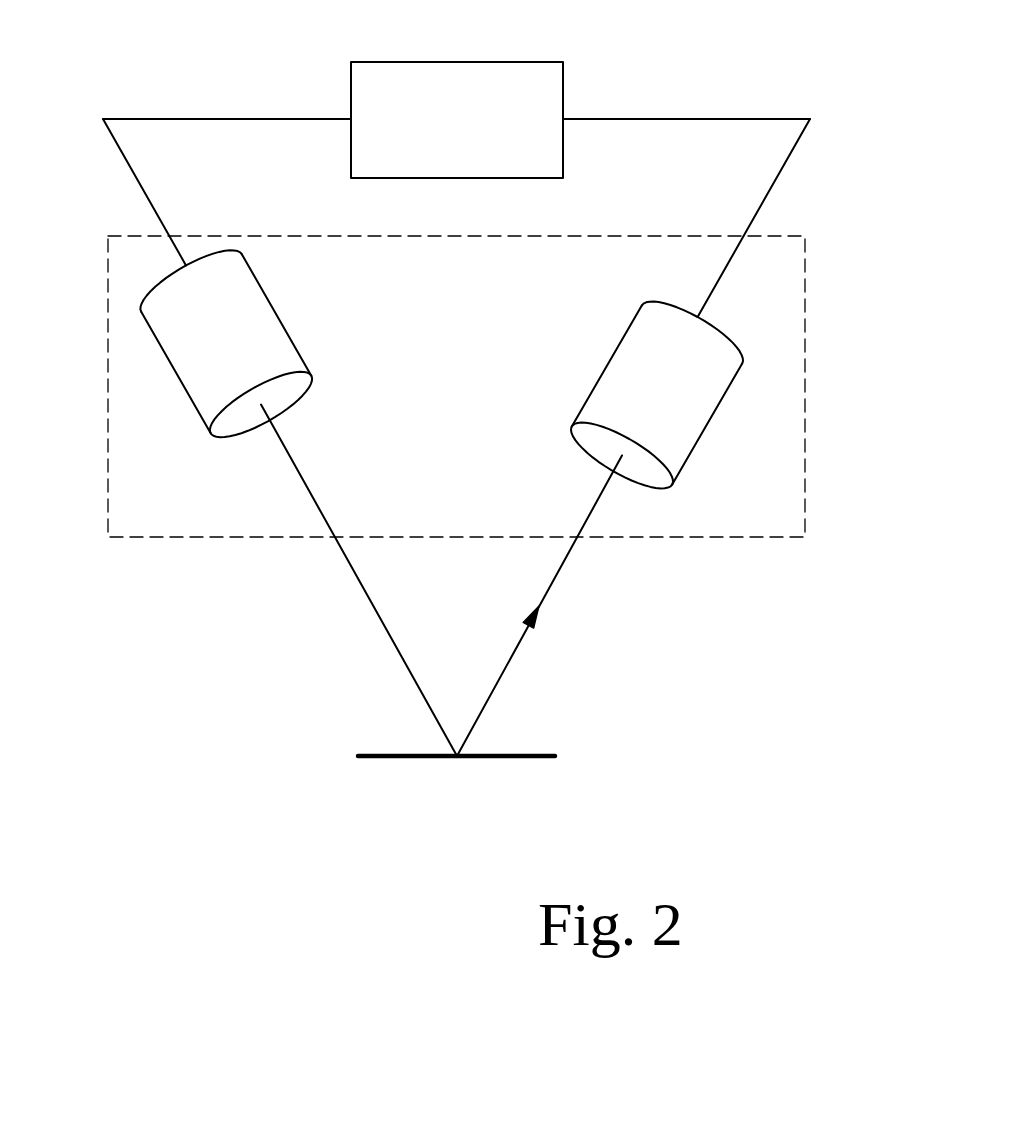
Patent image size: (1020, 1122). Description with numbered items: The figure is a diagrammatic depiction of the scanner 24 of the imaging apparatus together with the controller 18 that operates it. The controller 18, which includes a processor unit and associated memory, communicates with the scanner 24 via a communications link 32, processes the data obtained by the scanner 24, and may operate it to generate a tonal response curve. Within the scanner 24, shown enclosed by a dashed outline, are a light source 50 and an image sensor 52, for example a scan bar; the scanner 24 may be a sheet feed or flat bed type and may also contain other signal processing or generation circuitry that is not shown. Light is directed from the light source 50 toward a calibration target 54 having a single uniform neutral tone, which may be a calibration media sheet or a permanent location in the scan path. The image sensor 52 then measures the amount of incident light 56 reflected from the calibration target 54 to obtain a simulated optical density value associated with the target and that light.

The controller 18 is at (457, 120).
The scanner 24 is at (805, 362).
The communications link 32 is at (212, 119).
The light source 50 is at (172, 368).
The image sensor 52 is at (725, 393).
The calibration target 54 is at (390, 758).
The incident light 56 is at (511, 662).